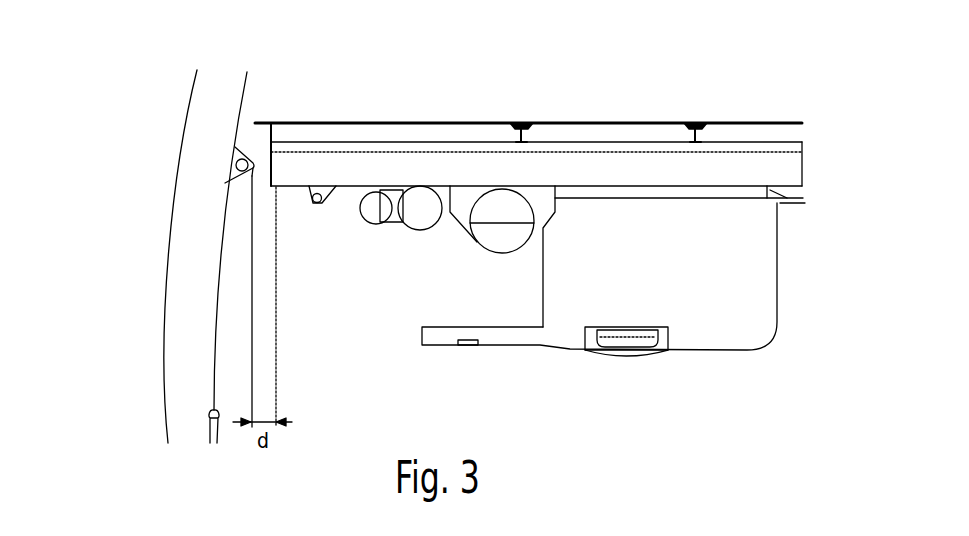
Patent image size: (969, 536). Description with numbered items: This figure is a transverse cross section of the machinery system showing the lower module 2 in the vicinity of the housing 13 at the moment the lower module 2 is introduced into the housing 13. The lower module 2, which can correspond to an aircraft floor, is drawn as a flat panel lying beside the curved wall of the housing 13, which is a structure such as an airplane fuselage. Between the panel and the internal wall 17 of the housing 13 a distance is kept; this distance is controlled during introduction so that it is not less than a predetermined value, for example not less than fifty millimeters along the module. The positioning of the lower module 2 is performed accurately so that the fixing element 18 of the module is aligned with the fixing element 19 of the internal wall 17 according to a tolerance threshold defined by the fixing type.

The lower module 2 is at (663, 123).
The housing 13 is at (165, 330).
The internal wall 17 is at (245, 103).
The fixing element 18 is at (313, 205).
The fixing element 19 is at (235, 147).